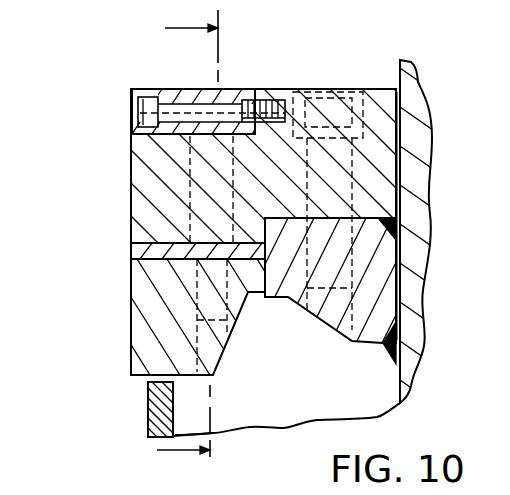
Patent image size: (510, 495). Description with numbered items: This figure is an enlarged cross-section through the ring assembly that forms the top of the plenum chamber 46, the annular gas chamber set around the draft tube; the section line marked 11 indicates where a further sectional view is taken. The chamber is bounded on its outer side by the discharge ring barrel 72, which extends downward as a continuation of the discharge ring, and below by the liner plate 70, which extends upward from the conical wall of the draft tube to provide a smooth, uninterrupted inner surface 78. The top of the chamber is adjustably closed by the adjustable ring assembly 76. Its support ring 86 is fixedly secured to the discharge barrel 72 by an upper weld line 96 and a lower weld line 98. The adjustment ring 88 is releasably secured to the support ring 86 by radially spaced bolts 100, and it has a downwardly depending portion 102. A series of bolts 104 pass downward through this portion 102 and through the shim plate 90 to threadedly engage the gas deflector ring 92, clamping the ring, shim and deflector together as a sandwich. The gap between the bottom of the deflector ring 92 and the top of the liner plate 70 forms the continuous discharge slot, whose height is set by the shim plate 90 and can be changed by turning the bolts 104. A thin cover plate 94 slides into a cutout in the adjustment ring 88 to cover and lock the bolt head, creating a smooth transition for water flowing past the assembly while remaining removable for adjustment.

The section line 11- 11 is at (207, 236).
The plenum chamber 46 is at (287, 404).
The liner plate 70 is at (148, 415).
The discharge ring barrel 72 is at (399, 71).
The adjustable ring assembly 76 is at (88, 175).
The inner surface 78 is at (150, 435).
The support ring 86 is at (356, 335).
The adjustment ring 88 is at (400, 148).
The shim plate 90 is at (131, 251).
The gas deflector ring 92 is at (131, 300).
The cover plate 94 is at (162, 89).
The upper weld line 96 is at (398, 228).
The lower weld line 98 is at (397, 349).
The bolt 100 is at (332, 89).
The downwardly depending portion 102 is at (131, 230).
The bolt 104 is at (185, 164).